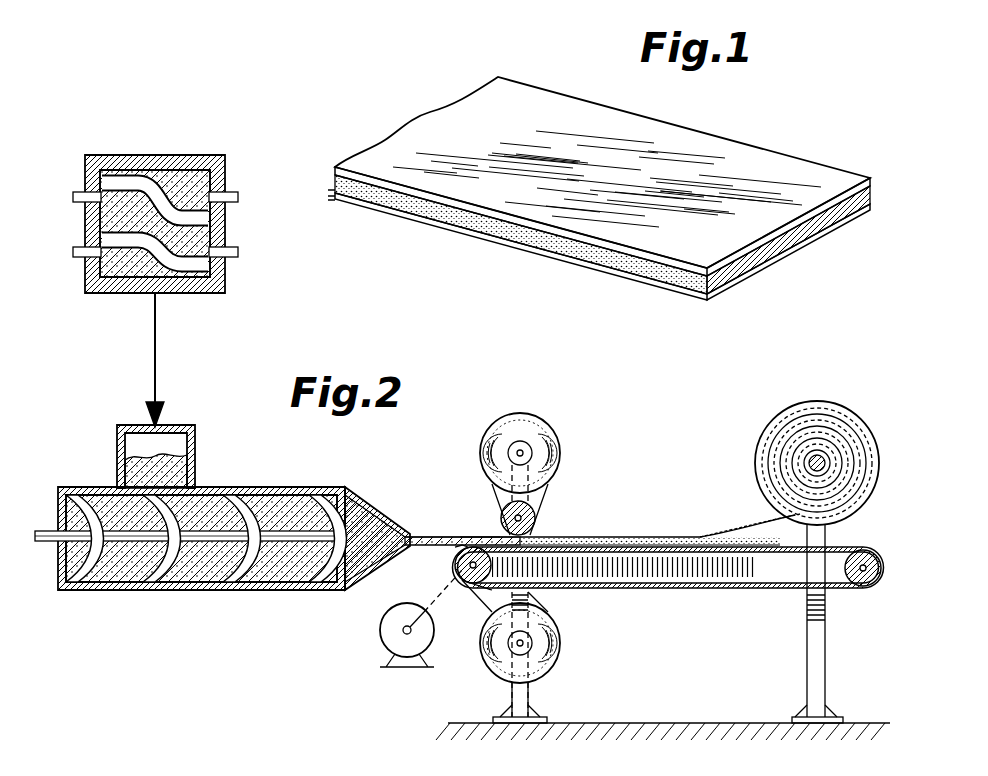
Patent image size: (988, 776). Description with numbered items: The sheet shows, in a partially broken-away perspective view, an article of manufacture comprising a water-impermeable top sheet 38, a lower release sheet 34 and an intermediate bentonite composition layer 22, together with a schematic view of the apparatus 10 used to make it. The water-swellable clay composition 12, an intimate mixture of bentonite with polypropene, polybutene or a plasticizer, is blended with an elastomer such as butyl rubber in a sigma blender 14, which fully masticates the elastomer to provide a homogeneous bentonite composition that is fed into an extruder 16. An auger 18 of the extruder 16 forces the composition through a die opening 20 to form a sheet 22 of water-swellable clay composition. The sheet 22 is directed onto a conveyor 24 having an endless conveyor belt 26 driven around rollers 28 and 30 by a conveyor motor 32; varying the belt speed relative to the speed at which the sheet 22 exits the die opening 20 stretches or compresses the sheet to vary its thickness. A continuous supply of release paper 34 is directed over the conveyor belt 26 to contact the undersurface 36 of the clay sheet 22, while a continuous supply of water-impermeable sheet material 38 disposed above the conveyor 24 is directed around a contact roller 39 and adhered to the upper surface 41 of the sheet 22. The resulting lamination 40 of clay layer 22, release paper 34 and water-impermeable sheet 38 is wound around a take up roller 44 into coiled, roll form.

In FIG. 2, the apparatus 10 is at (130, 612).
In FIG. 2, the water-swellable clay composition 12 is at (126, 472).
In FIG. 2, the sigma blender 14 is at (152, 156).
In FIG. 2, the extruder 16 is at (182, 426).
In FIG. 2, the auger 18 is at (176, 570).
In FIG. 2, the die opening 20 is at (446, 536).
In FIG. 1, the sheet of water-swellable clay composition 22 is at (800, 228).
In FIG. 2, the sheet of water-swellable clay composition 22 is at (490, 536).
In FIG. 2, the conveyor 24 is at (686, 618).
In FIG. 2, the endless conveyor belt 26 is at (716, 592).
In FIG. 2, the roller 28 is at (460, 570).
In FIG. 2, the roller 30 is at (878, 588).
In FIG. 2, the conveyor motor 32 is at (380, 632).
In FIG. 1, the release paper 34 is at (610, 266).
In FIG. 2, the release paper 34 is at (552, 642).
In FIG. 2, the undersurface 36 is at (456, 549).
In FIG. 1, the water-impermeable sheet material 38 is at (722, 145).
In FIG. 2, the water-impermeable sheet material 38 is at (552, 450).
In FIG. 2, the contact roller 39 is at (536, 518).
In FIG. 1, the lamination 40 is at (818, 130).
In FIG. 2, the lamination 40 is at (688, 536).
In FIG. 2, the upper surface 41 is at (470, 538).
In FIG. 2, the take up roller 44 is at (830, 410).